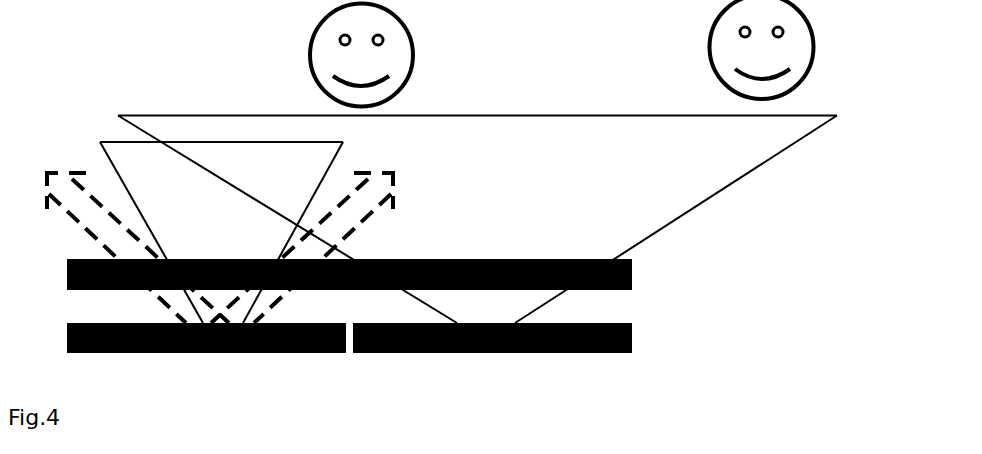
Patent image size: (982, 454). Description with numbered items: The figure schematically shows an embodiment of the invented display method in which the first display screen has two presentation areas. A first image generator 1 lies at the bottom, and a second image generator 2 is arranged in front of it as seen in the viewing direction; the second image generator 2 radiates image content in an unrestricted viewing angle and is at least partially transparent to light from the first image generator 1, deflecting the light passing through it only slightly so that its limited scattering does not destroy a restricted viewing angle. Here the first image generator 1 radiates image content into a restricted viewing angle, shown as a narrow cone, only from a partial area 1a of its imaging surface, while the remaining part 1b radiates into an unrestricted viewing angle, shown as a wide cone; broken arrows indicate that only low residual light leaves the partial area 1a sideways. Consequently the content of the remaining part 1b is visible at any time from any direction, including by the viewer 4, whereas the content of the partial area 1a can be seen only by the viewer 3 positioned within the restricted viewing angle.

The first image generator 1 is at (432, 359).
The partial area 1a is at (206, 359).
The remaining part 1b is at (492, 359).
The second image generator 2 is at (643, 276).
The viewer 3 is at (423, 48).
The viewer 4 is at (693, 48).